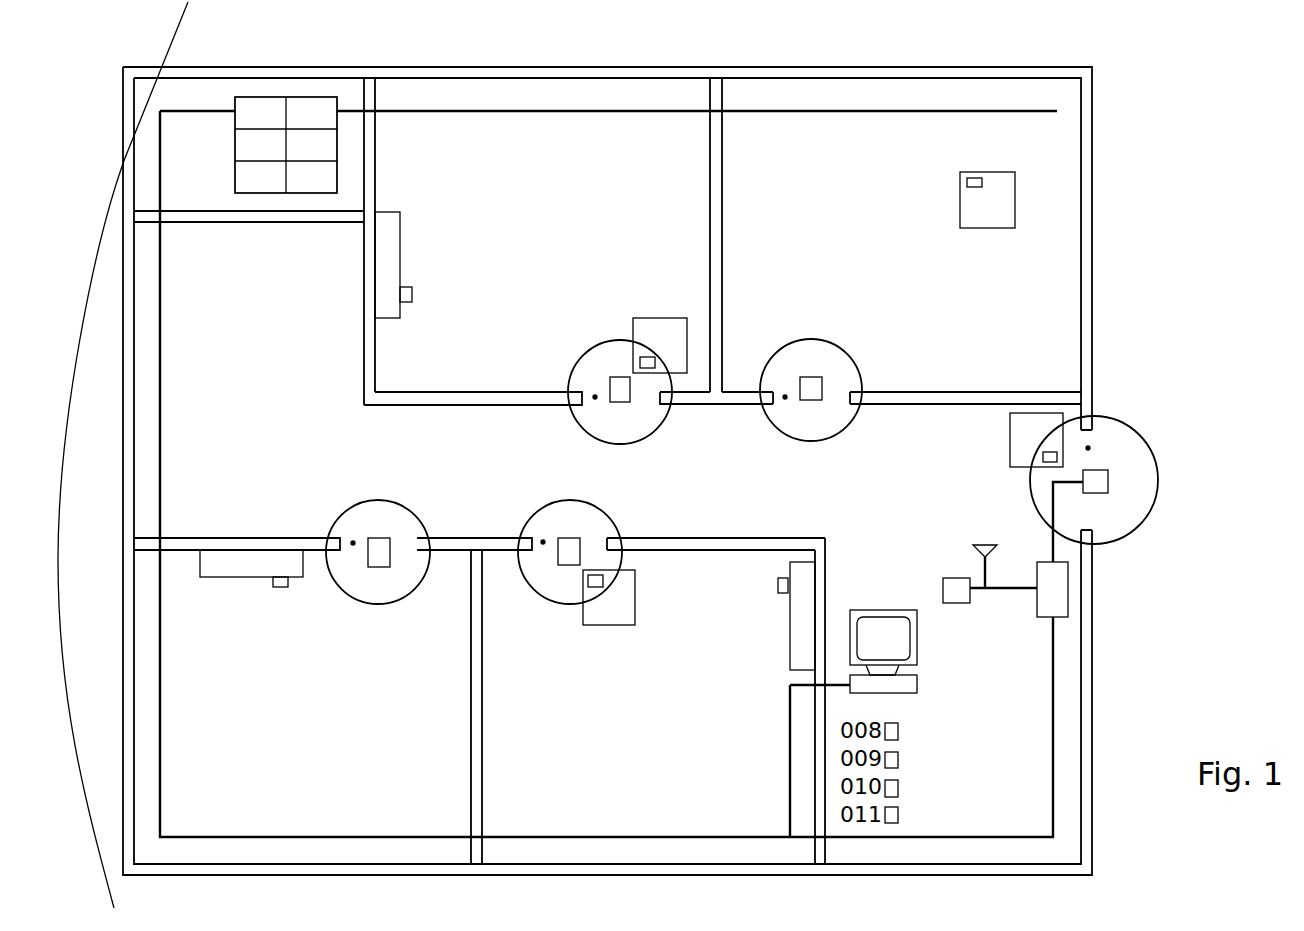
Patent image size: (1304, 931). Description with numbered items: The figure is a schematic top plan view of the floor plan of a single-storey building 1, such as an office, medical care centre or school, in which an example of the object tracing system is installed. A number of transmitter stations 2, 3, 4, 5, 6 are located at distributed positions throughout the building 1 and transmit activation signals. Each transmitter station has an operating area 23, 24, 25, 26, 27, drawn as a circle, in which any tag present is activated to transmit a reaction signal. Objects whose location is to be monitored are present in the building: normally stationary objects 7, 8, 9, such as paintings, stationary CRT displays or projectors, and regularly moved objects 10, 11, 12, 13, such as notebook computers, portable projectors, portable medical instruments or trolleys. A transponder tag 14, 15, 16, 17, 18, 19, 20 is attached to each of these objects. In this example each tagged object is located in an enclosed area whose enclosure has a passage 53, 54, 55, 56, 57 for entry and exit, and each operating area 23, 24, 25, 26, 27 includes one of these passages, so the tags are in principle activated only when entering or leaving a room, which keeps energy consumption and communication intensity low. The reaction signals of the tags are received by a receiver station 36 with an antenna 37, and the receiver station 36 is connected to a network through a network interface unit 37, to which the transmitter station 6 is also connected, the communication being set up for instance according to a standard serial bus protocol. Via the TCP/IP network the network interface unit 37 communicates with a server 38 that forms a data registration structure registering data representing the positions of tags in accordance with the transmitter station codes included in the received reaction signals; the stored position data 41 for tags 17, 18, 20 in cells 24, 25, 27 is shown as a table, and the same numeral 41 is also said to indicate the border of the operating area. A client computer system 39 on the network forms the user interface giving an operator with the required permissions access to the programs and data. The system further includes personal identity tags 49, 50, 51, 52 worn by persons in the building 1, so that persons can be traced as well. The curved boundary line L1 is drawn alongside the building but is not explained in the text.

The building 1 is at (1097, 225).
The transmitter station 2 is at (378, 538).
The transmitter station 3 is at (605, 378).
The transmitter station 4 is at (570, 538).
The transmitter station 5 is at (812, 377).
The transmitter station 6 is at (1108, 480).
The stationary object 7 is at (205, 578).
The stationary object 8 is at (400, 215).
The stationary object 9 is at (790, 660).
The regularly moved object 10 is at (663, 318).
The regularly moved object 11 is at (610, 625).
The regularly moved object 12 is at (988, 228).
The regularly moved object 13 is at (1010, 436).
The transponder tag 14 is at (290, 584).
The transponder tag 15 is at (408, 303).
The transponder tag 16 is at (782, 595).
The transponder tag 17 is at (640, 362).
The transponder tag 18 is at (603, 580).
The transponder tag 19 is at (967, 182).
The transponder tag 20 is at (1050, 462).
The operating area 23 is at (410, 510).
The operating area 24 is at (656, 424).
The operating area 25 is at (605, 508).
The operating area 26 is at (845, 348).
The operating area 27 is at (1137, 528).
The receiver station 36 is at (958, 604).
The network interface unit 37 is at (978, 548).
The server 38 is at (262, 194).
The client computer system 39 is at (917, 685).
The data representing positions of tags 41 is at (235, 107).
The personal identity tag 49 is at (898, 731).
The personal identity tag 50 is at (898, 759).
The personal identity tag 51 is at (898, 787).
The personal identity tag 52 is at (898, 815).
The passage 53 is at (353, 541).
The passage 54 is at (595, 399).
The passage 55 is at (543, 540).
The passage 56 is at (785, 395).
The passage 57 is at (1090, 448).
The boundary line L1 is at (97, 222).